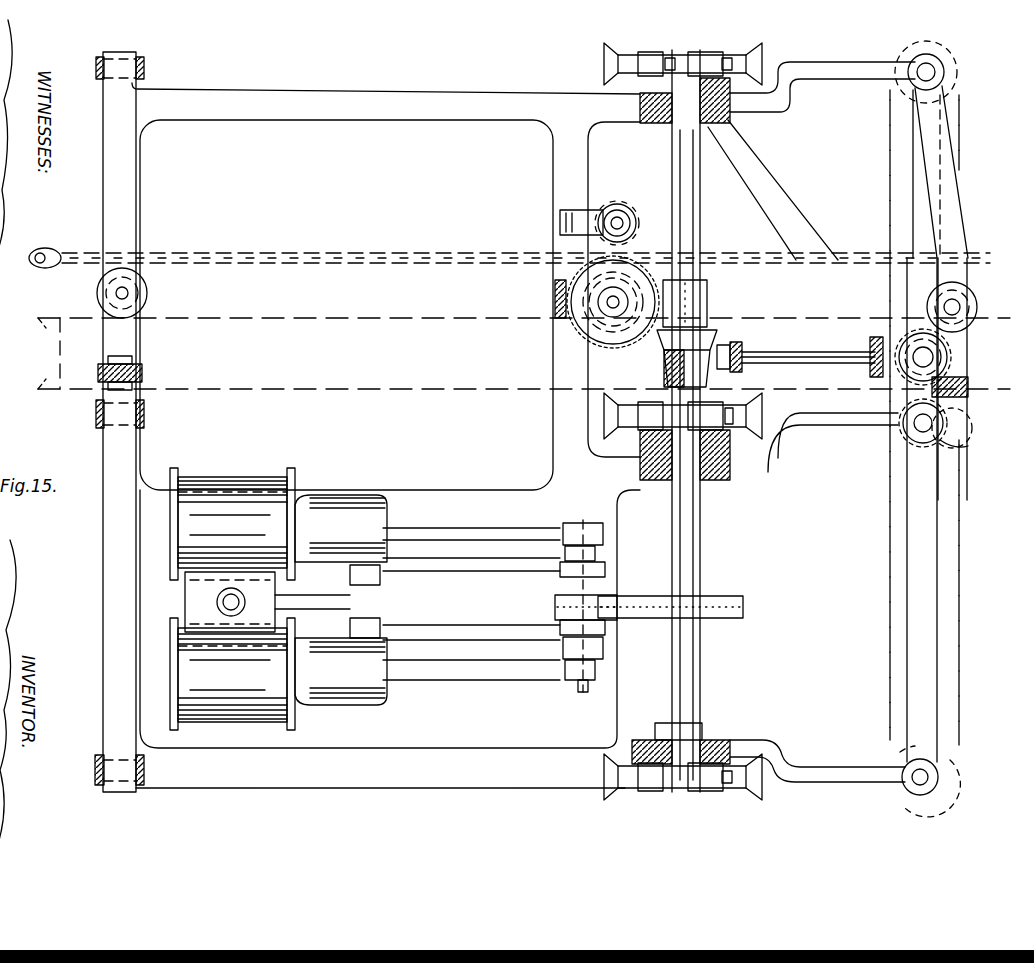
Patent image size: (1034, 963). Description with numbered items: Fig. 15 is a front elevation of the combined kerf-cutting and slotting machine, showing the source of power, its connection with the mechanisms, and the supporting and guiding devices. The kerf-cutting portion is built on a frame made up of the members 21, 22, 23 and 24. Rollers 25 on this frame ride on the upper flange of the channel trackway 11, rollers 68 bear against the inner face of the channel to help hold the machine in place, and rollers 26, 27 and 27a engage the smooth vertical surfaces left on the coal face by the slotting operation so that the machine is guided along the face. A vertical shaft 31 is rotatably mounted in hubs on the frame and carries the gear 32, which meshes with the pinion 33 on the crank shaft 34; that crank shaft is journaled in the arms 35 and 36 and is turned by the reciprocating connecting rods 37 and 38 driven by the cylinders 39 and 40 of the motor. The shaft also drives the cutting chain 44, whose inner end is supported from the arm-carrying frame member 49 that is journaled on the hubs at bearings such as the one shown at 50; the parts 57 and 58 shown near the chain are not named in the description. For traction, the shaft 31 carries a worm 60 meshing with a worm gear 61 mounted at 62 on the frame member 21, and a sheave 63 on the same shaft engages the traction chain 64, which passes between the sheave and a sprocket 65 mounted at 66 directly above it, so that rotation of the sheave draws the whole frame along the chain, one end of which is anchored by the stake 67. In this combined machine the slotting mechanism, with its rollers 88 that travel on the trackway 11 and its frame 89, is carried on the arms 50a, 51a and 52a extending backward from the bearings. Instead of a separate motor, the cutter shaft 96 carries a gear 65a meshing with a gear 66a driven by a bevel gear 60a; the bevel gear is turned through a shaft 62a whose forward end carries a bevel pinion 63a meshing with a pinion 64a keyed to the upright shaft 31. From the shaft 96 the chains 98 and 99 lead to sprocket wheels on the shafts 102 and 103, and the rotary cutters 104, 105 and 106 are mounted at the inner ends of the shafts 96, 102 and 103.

The track or guideway 11 is at (205, 338).
The frame member 21 is at (552, 378).
The frame member 22 is at (353, 121).
The frame member 23 is at (150, 251).
The frame member 24 is at (330, 765).
The rollers 25 is at (148, 292).
The roller 26 is at (148, 76).
The roller 27 is at (145, 413).
The roller 27a is at (92, 768).
The vertical shaft 31 is at (688, 212).
The gear 32 is at (700, 606).
The pinion 33 is at (555, 607).
The crank shaft 34 is at (588, 690).
The arm 35 is at (468, 560).
The arm 36 is at (500, 655).
The connecting rod 37 is at (440, 672).
The connecting rod 38 is at (432, 532).
The cylinder 39 is at (278, 674).
The cylinder 40 is at (278, 526).
The cutting chain 44 is at (618, 66).
The frame member 49 is at (785, 212).
The bearing 50 is at (668, 56).
The arm 50a is at (790, 75).
The arm 51a is at (805, 428).
The arm 52a is at (800, 770).
The collar 57 is at (705, 58).
The sprocket 58 is at (712, 432).
The worm 60 is at (735, 260).
The bevel gear 60a is at (905, 378).
The worm gear 61 is at (622, 336).
The mounting 62 is at (557, 298).
The shaft 62a is at (768, 352).
The sheave 63 is at (578, 322).
The bevel pinion 63a is at (732, 330).
The traction chain 64 is at (102, 250).
The pinion 64a is at (726, 312).
The sprocket 65 is at (620, 212).
The gear 65a is at (968, 446).
The mounting 66 is at (558, 222).
The gear 66a is at (893, 325).
The stake 67 is at (34, 262).
The rollers 68 is at (142, 370).
The rollers 88 is at (975, 302).
The frame 89 is at (948, 212).
The cutter shaft 96 is at (898, 428).
The chain 98 is at (888, 208).
The chain 99 is at (960, 572).
The shaft 102 is at (945, 72).
The shaft 103 is at (935, 770).
The rotary cutter 104 is at (955, 60).
The rotary cutter 105 is at (960, 428).
The rotary cutter 106 is at (945, 782).